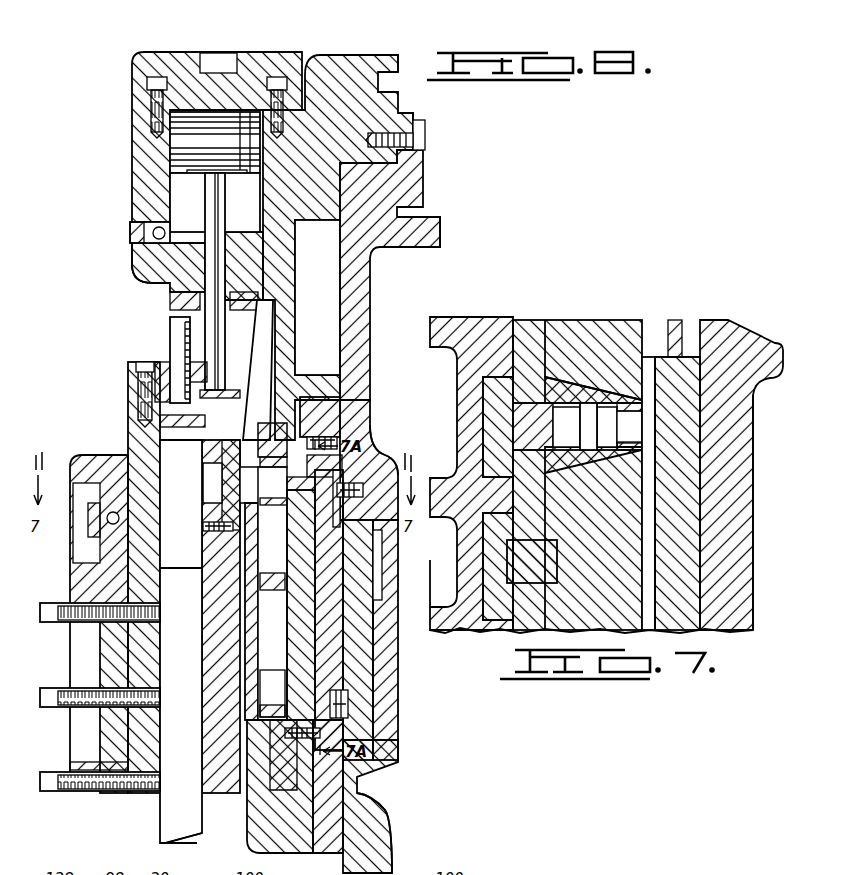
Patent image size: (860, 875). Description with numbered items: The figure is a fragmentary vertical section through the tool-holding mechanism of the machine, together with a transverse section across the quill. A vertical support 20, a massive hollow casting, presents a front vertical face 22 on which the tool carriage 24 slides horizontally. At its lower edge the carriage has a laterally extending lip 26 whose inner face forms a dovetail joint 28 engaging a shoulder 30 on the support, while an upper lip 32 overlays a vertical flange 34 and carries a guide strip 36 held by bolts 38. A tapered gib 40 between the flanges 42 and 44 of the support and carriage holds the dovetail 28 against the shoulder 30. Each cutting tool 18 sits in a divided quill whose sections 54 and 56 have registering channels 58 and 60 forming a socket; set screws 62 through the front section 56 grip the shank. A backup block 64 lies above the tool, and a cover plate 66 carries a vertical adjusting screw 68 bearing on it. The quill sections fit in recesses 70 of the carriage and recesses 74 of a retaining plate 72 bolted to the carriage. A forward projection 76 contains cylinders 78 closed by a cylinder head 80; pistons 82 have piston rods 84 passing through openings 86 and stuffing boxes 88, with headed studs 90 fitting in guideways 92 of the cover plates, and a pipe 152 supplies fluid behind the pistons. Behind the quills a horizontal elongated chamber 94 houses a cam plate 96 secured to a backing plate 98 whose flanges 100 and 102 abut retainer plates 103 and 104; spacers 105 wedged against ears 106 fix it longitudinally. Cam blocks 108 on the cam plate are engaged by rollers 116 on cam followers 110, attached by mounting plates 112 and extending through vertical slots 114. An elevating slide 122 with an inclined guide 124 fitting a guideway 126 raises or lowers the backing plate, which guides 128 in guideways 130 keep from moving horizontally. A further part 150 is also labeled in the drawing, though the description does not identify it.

In FIG. 6, the cutting tool 18 is at (185, 845).
In FIG. 6, the vertical support 20 is at (447, 238).
In FIG. 7, the vertical support 20 is at (735, 470).
In FIG. 6, the front vertical face 22 is at (355, 308).
In FIG. 7, the front vertical face 22 is at (700, 530).
In FIG. 6, the tool carriage 24 is at (345, 70).
In FIG. 7, the tool carriage 24 is at (582, 332).
In FIG. 6, the laterally extending lip 26 is at (295, 845).
In FIG. 6, the dovetail joint 28 is at (330, 812).
In FIG. 6, the shoulder 30 is at (362, 776).
In FIG. 6, the laterally extending lip 32 is at (382, 115).
In FIG. 6, the vertical flange 34 is at (403, 185).
In FIG. 6, the guide strip 36 is at (426, 133).
In FIG. 6, the bolts 38 is at (418, 145).
In FIG. 6, the longitudinally tapered gib 40 is at (338, 405).
In FIG. 6, the flange 42 is at (320, 436).
In FIG. 6, the flange 44 is at (340, 362).
In FIG. 6, the quill section 54 is at (215, 815).
In FIG. 7, the quill section 54 is at (520, 380).
In FIG. 6, the front quill section 56 is at (142, 762).
In FIG. 7, the front quill section 56 is at (490, 378).
In FIG. 7, the longitudinal channel 58 is at (560, 540).
In FIG. 7, the longitudinal channel 60 is at (438, 580).
In FIG. 6, the set screws 62 is at (58, 622).
In FIG. 6, the backup block 64 is at (150, 445).
In FIG. 6, the cover plate 66 is at (134, 370).
In FIG. 6, the vertical adjusting screw 68 is at (172, 334).
In FIG. 7, the recesses 70 is at (552, 395).
In FIG. 6, the retaining plate 72 is at (96, 568).
In FIG. 7, the retaining plate 72 is at (458, 630).
In FIG. 6, the recesses 74 is at (350, 406).
In FIG. 6, the forward projection 76 is at (145, 188).
In FIG. 6, the cylinders 78 is at (188, 200).
In FIG. 6, the cylinder head 80 is at (145, 82).
In FIG. 6, the pistons 82 is at (185, 142).
In FIG. 6, the piston rods 84 is at (208, 188).
In FIG. 6, the openings 86 is at (192, 250).
In FIG. 6, the stuffing boxes 88 is at (175, 292).
In FIG. 6, the headed studs 90 is at (256, 370).
In FIG. 6, the recesses or guideways 92 is at (215, 380).
In FIG. 6, the horizontal elongated chamber 94 is at (256, 640).
In FIG. 6, the cam plate 96 is at (368, 672).
In FIG. 7, the cam plate 96 is at (650, 357).
In FIG. 6, the backing plate 98 is at (352, 712).
In FIG. 7, the backing plate 98 is at (690, 424).
In FIG. 6, the forwardly projecting flange 100 is at (322, 466).
In FIG. 6, the forwardly projecting flange 102 is at (345, 748).
In FIG. 6, the retainer plate 103 is at (295, 432).
In FIG. 6, the retainer plate 104 is at (278, 746).
In FIG. 7, the spacers 105 is at (690, 345).
In FIG. 7, the forwardly projecting ears 106 is at (682, 335).
In FIG. 6, the cam blocks 108 is at (245, 580).
In FIG. 6, the cam followers 110 is at (212, 478).
In FIG. 7, the cam followers 110 is at (598, 435).
In FIG. 6, the mounting plates 112 is at (228, 486).
In FIG. 7, the mounting plates 112 is at (587, 405).
In FIG. 6, the vertical slots 114 is at (232, 538).
In FIG. 6, the rollers 116 is at (268, 588).
In FIG. 6, the elevating slide 122 is at (355, 606).
In FIG. 6, the guide 124 is at (350, 632).
In FIG. 6, the guideway 126 is at (275, 568).
In FIG. 6, the guides 128 is at (372, 450).
In FIG. 6, the vertical elongated guideways 130 is at (300, 684).
In FIG. 6, the plate 150 is at (303, 515).
In FIG. 6, the pipe 152 is at (185, 95).